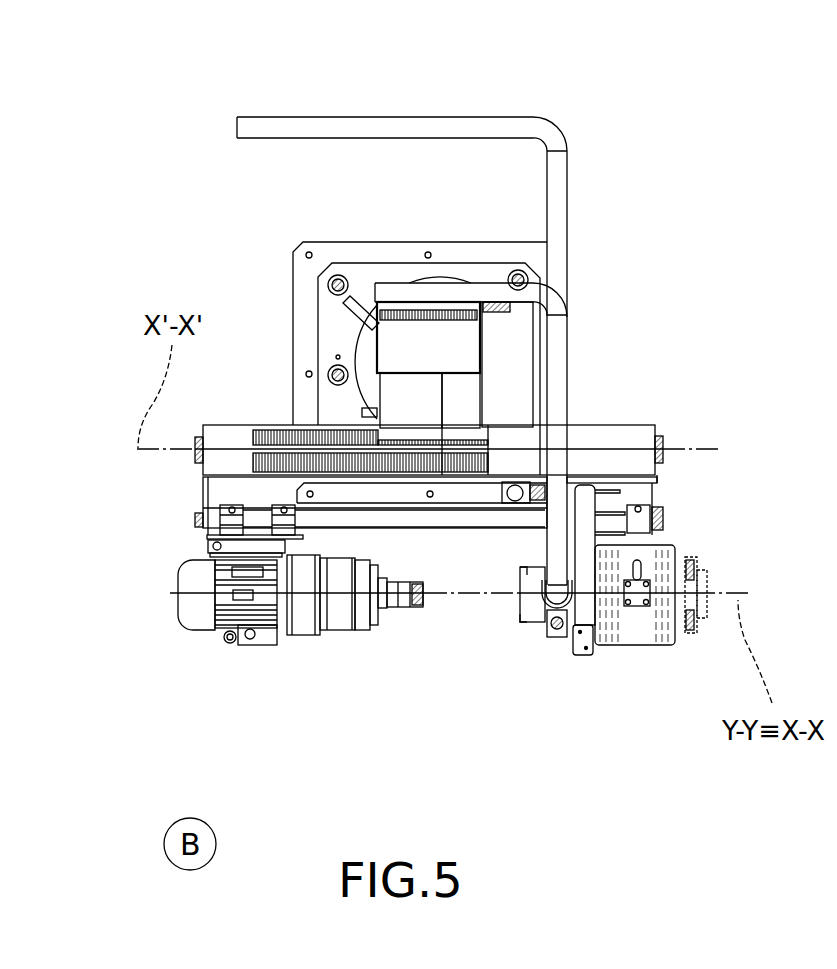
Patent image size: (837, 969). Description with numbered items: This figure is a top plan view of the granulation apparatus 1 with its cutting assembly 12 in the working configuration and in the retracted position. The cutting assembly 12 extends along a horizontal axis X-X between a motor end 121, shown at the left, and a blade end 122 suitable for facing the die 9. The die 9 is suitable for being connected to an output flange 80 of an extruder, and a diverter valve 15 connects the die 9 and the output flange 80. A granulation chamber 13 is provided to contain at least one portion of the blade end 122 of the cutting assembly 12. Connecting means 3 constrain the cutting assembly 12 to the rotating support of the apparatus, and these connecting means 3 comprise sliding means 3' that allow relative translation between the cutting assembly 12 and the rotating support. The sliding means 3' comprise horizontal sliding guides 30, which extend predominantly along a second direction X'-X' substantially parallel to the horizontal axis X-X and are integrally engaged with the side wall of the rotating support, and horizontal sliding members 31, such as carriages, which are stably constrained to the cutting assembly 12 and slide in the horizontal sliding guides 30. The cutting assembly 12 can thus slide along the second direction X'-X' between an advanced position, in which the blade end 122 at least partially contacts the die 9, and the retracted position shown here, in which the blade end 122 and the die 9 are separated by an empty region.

The granulation apparatus 1 is at (676, 153).
The connecting means 3 is at (470, 396).
The sliding means 3' is at (730, 463).
The die 9 is at (586, 664).
The cutting assembly 12 is at (256, 666).
The granulation chamber 13 is at (532, 630).
The diverter valve 15 is at (637, 642).
The horizontal sliding guides 30 is at (450, 520).
The horizontal sliding members 31 is at (195, 518).
The output flange 80 is at (698, 558).
The motor end 121 is at (183, 622).
The blade end 122 is at (410, 612).